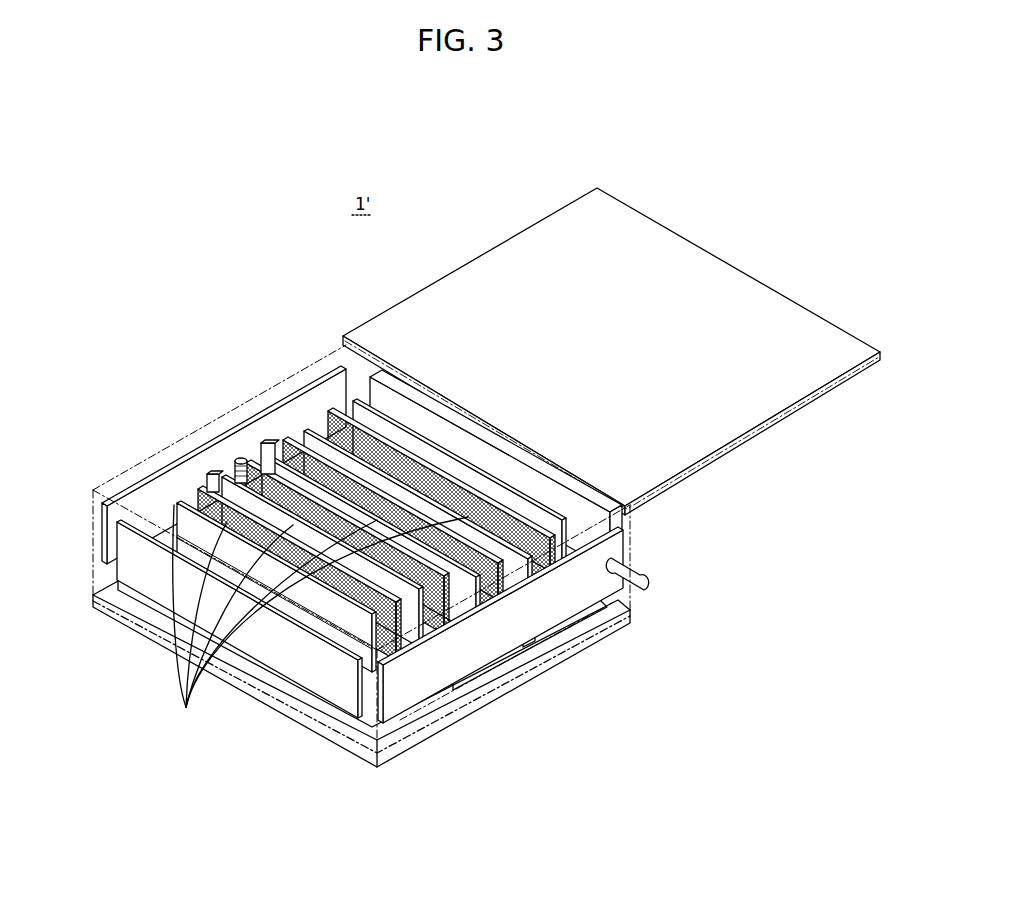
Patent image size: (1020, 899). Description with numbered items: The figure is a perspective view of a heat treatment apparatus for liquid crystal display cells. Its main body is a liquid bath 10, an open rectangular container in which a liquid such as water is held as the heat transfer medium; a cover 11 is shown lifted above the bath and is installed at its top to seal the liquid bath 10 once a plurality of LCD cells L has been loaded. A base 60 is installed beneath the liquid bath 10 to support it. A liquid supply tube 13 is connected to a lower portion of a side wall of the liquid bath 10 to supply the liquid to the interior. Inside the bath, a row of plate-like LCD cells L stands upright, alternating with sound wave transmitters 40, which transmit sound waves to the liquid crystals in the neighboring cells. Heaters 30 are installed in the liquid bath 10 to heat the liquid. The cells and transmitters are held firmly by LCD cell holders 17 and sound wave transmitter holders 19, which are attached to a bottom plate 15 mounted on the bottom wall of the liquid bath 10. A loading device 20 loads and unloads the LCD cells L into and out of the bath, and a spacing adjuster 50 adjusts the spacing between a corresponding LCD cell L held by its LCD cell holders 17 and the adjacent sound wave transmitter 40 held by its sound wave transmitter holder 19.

The liquid bath 10 is at (645, 548).
The cover 11 is at (605, 204).
The liquid supply tube 13 is at (646, 574).
The bottom plate 15 is at (363, 713).
The LCD cell holder 17 is at (392, 730).
The sound wave transmitter holder 19 is at (380, 728).
The loading device 20 is at (530, 632).
The heater 30 is at (380, 498).
The sound wave transmitter 40 is at (348, 405).
The spacing adjuster 50 is at (438, 728).
The base 60 is at (246, 707).